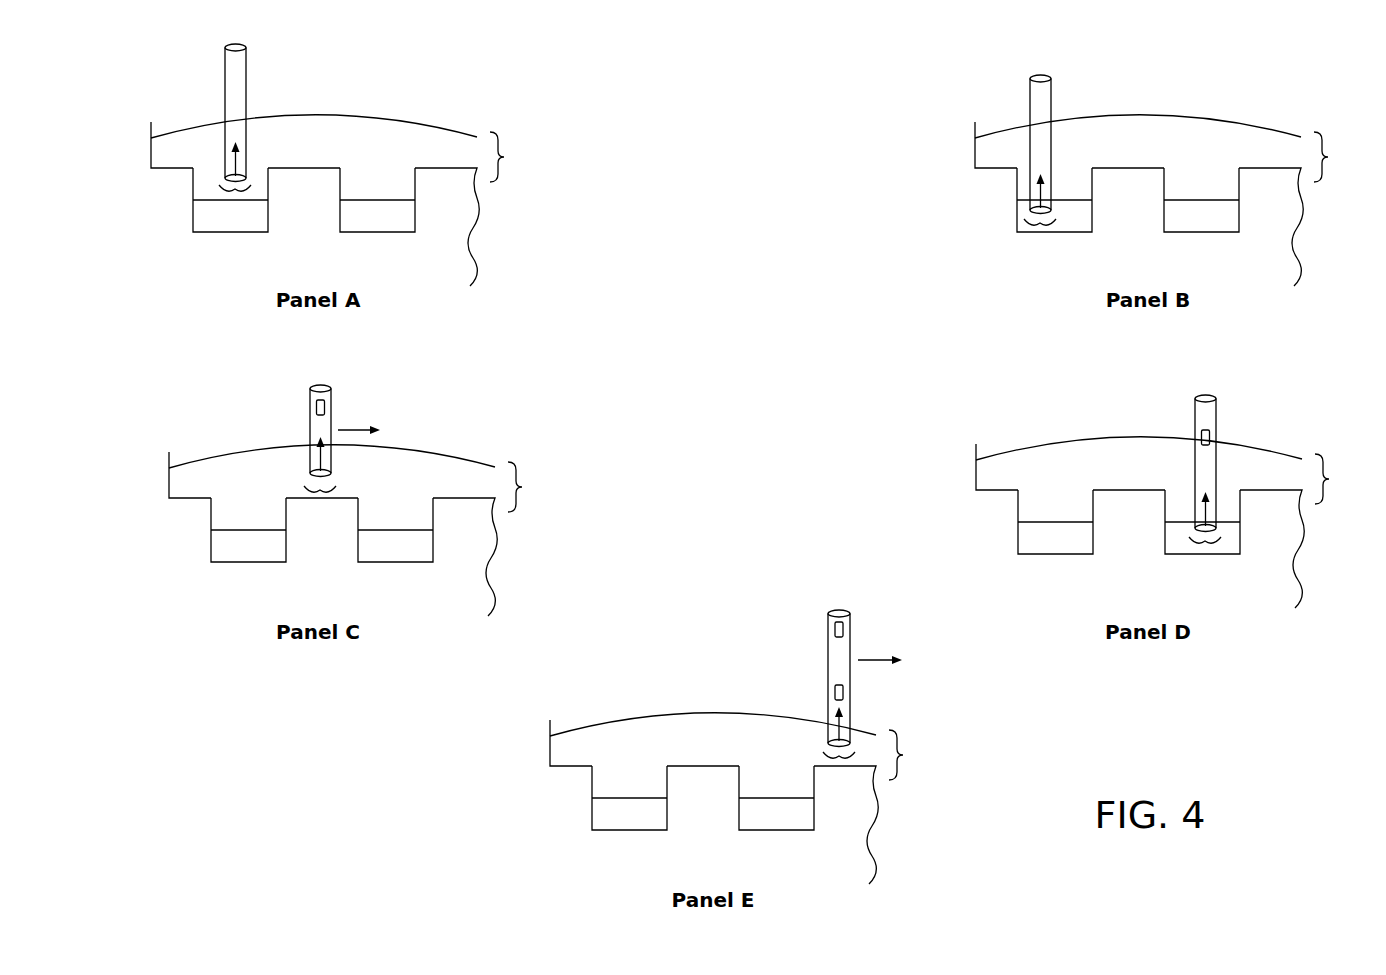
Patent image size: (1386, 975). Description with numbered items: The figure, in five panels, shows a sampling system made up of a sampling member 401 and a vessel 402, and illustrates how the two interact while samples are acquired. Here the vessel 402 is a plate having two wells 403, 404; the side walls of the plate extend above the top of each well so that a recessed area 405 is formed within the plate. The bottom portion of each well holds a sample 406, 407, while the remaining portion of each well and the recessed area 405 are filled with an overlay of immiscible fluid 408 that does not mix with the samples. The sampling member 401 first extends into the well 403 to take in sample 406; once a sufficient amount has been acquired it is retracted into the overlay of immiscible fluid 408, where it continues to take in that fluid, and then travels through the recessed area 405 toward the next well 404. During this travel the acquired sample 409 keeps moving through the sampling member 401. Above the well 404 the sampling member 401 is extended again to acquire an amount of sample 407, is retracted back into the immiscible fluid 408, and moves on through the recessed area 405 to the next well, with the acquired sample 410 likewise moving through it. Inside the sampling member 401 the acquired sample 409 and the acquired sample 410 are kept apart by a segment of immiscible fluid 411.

The sampling member 401 is at (247, 78).
The vessel 402 is at (150, 152).
The well 403 is at (206, 234).
The well 404 is at (403, 234).
The recessed area 405 is at (933, 456).
The sample 406 is at (198, 215).
The sample 407 is at (345, 215).
The overlay of immiscible fluid 408 is at (432, 135).
The acquired sample 409 is at (326, 407).
The acquired sample 410 is at (845, 691).
The immiscible fluid 411 is at (838, 662).